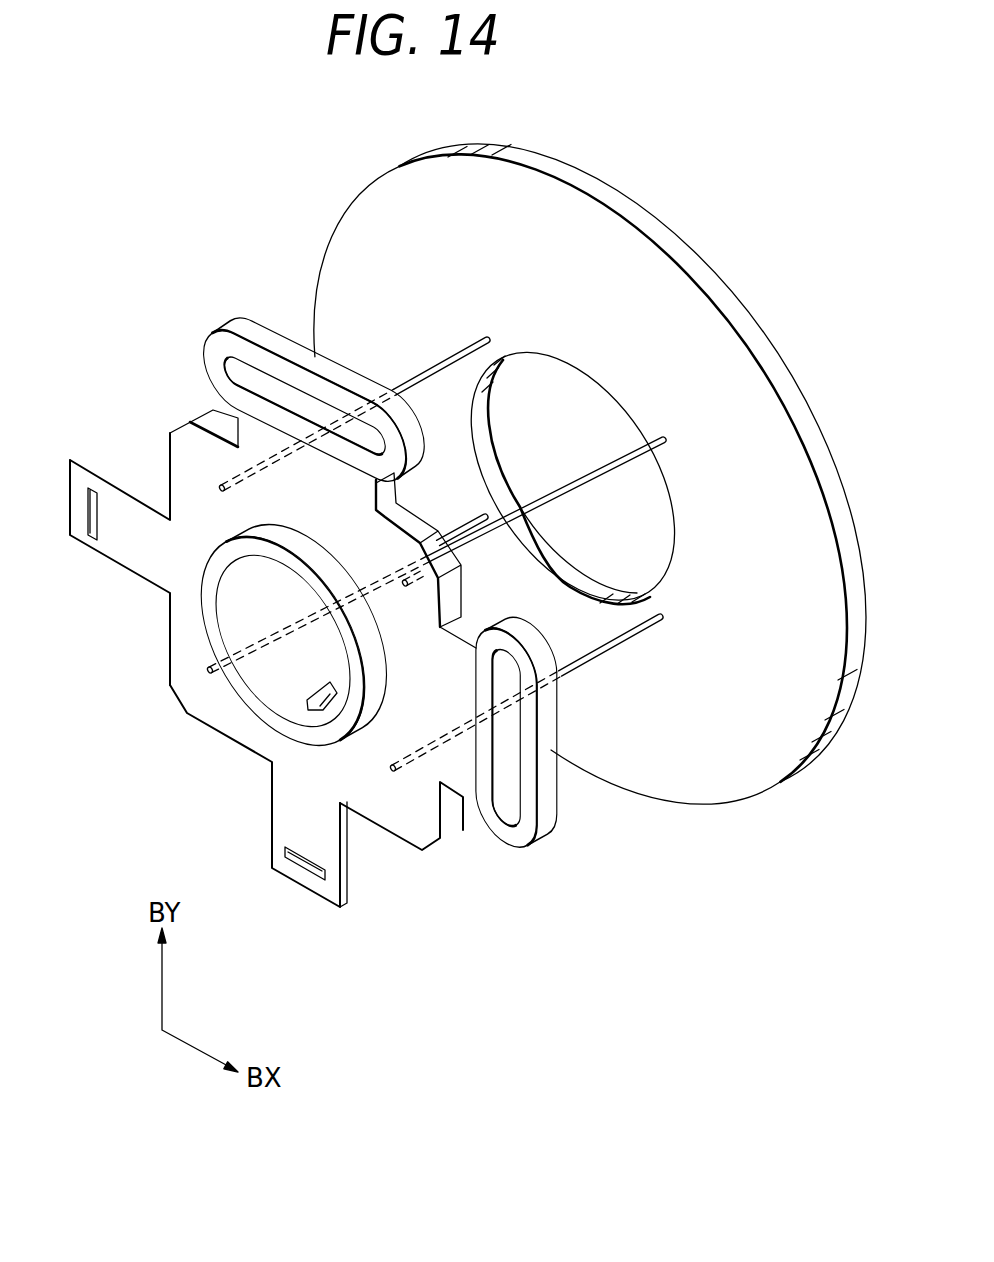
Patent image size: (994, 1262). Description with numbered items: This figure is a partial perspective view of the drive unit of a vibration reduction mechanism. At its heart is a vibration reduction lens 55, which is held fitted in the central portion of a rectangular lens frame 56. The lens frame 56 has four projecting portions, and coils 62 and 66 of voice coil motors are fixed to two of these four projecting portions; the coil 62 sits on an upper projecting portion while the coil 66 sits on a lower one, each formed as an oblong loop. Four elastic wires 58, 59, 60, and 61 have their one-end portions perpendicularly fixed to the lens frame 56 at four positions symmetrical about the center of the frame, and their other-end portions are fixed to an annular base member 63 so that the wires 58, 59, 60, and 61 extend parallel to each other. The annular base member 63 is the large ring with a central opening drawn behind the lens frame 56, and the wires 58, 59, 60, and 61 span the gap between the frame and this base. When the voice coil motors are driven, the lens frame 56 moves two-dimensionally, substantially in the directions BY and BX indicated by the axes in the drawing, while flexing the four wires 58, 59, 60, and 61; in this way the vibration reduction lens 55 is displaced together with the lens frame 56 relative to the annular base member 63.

The vibration reduction lens 55 is at (262, 685).
The lens frame 56 is at (172, 670).
The elastic wire 58 is at (628, 648).
The elastic wire 59 is at (668, 448).
The elastic wire 60 is at (462, 348).
The elastic wire 61 is at (455, 525).
The coil 62 is at (218, 350).
The annular base member 63 is at (712, 292).
The coil 66 is at (520, 848).